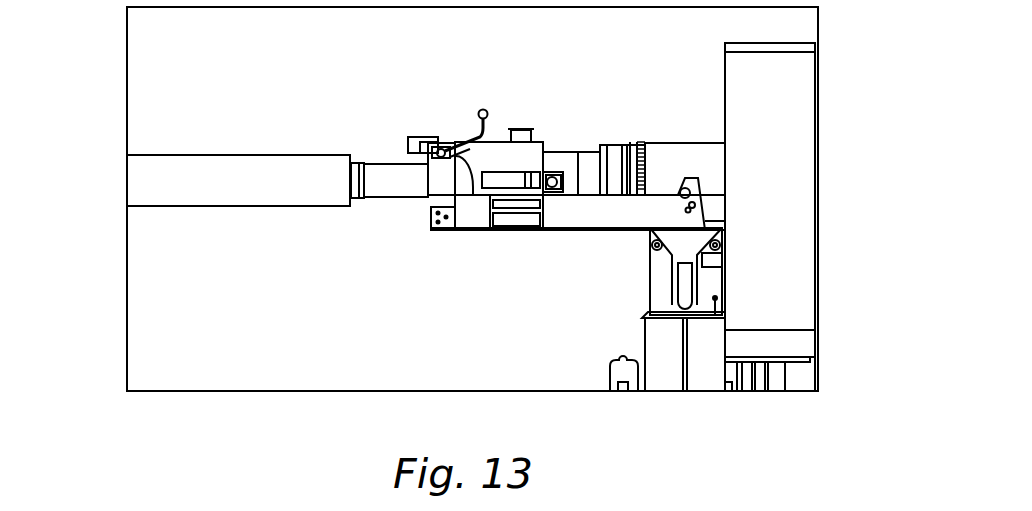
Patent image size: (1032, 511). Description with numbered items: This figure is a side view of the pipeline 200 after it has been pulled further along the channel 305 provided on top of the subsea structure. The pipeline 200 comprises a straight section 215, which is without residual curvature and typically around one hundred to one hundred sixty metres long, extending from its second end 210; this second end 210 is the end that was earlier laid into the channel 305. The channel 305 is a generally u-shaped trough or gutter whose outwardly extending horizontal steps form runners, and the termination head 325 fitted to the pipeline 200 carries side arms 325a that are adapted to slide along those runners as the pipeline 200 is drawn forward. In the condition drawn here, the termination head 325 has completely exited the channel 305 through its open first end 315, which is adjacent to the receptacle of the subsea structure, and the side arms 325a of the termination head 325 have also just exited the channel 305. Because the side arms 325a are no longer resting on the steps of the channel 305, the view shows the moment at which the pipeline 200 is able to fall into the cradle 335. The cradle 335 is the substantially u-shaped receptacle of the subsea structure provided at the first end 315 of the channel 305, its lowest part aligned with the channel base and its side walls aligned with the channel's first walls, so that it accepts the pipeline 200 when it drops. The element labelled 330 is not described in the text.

The pipeline 200 is at (207, 186).
The second end 210 is at (351, 187).
The straight section 215 is at (138, 182).
The channel 305 is at (787, 112).
The first end 315 is at (725, 197).
The termination head 325 is at (463, 178).
The side arms 325a is at (570, 210).
The cylinder tube 330 is at (672, 158).
The cradle 335 is at (645, 372).